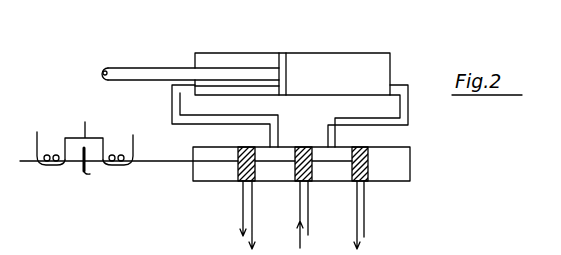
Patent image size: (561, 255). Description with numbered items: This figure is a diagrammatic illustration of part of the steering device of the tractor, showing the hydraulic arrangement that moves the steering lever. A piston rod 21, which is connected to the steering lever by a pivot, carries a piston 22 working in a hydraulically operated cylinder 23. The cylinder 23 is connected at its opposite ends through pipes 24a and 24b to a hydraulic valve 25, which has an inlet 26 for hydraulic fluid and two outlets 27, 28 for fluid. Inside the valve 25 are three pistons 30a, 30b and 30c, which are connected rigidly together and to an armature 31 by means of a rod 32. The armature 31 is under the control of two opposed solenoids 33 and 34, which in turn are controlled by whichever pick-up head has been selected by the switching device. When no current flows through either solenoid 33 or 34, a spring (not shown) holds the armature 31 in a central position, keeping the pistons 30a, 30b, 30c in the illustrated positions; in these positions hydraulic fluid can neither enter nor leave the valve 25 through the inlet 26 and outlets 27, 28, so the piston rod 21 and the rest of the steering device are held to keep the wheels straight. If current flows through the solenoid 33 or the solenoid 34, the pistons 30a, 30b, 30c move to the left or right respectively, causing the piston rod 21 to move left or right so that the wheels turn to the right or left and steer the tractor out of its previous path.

The piston rod 21 is at (167, 74).
The piston 22 is at (286, 70).
The hydraulically operated cylinder 23 is at (259, 53).
The pipe 24a is at (172, 100).
The pipe 24b is at (408, 118).
The hydraulic valve 25 is at (410, 181).
The inlet 26 is at (309, 208).
The outlet 27 is at (253, 208).
The outlet 28 is at (365, 212).
The piston 30a is at (254, 157).
The piston 30b is at (311, 157).
The piston 30c is at (368, 158).
The armature 31 is at (83, 173).
The rod 32 is at (153, 162).
The solenoid 33 is at (47, 166).
The solenoid 34 is at (117, 166).